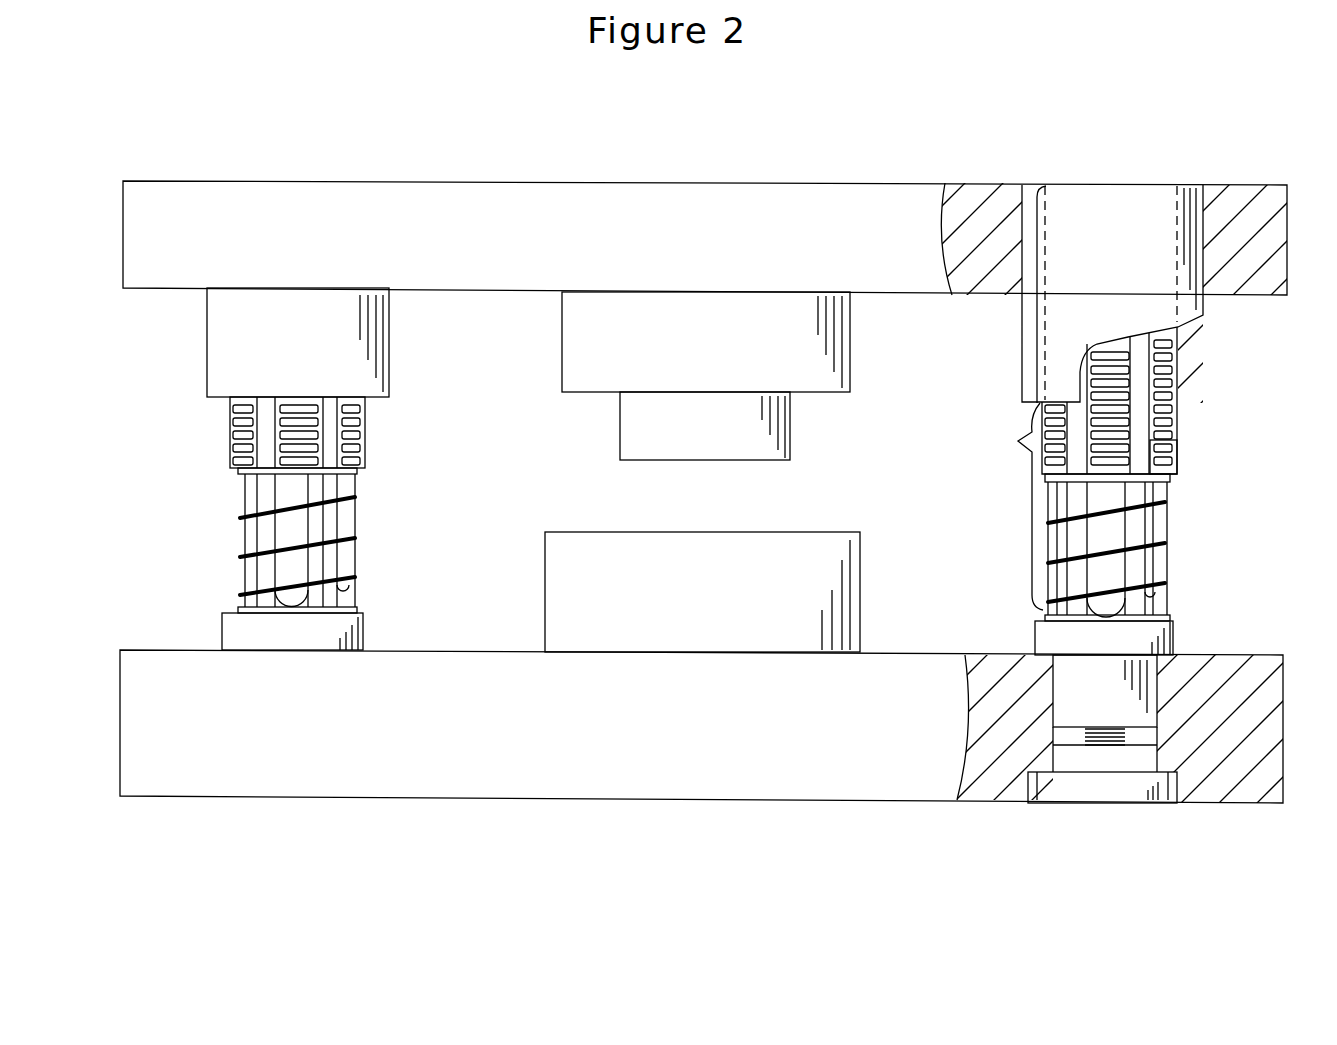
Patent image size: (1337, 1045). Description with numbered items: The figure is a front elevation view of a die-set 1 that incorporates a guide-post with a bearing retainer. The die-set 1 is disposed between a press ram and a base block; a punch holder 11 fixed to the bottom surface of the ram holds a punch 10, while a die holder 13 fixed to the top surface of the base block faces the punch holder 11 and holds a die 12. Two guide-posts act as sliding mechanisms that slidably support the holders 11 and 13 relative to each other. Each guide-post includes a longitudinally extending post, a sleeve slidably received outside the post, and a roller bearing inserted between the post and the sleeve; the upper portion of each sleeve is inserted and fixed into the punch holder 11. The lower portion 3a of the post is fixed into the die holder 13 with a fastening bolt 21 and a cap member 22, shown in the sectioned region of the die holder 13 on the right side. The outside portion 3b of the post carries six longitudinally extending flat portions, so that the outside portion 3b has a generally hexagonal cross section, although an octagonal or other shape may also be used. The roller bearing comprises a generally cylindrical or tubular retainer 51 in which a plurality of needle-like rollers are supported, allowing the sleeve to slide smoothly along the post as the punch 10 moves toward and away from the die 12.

The die-set 1 is at (498, 152).
The lower portion 3a is at (1155, 713).
The outside portion 3b is at (1004, 506).
The retainer 51 is at (1170, 476).
The punch 10 is at (790, 430).
The punch holder 11 is at (885, 200).
The die 12 is at (855, 584).
The die holder 13 is at (862, 770).
The fastening bolt 21 is at (1083, 737).
The cap member 22 is at (1128, 790).